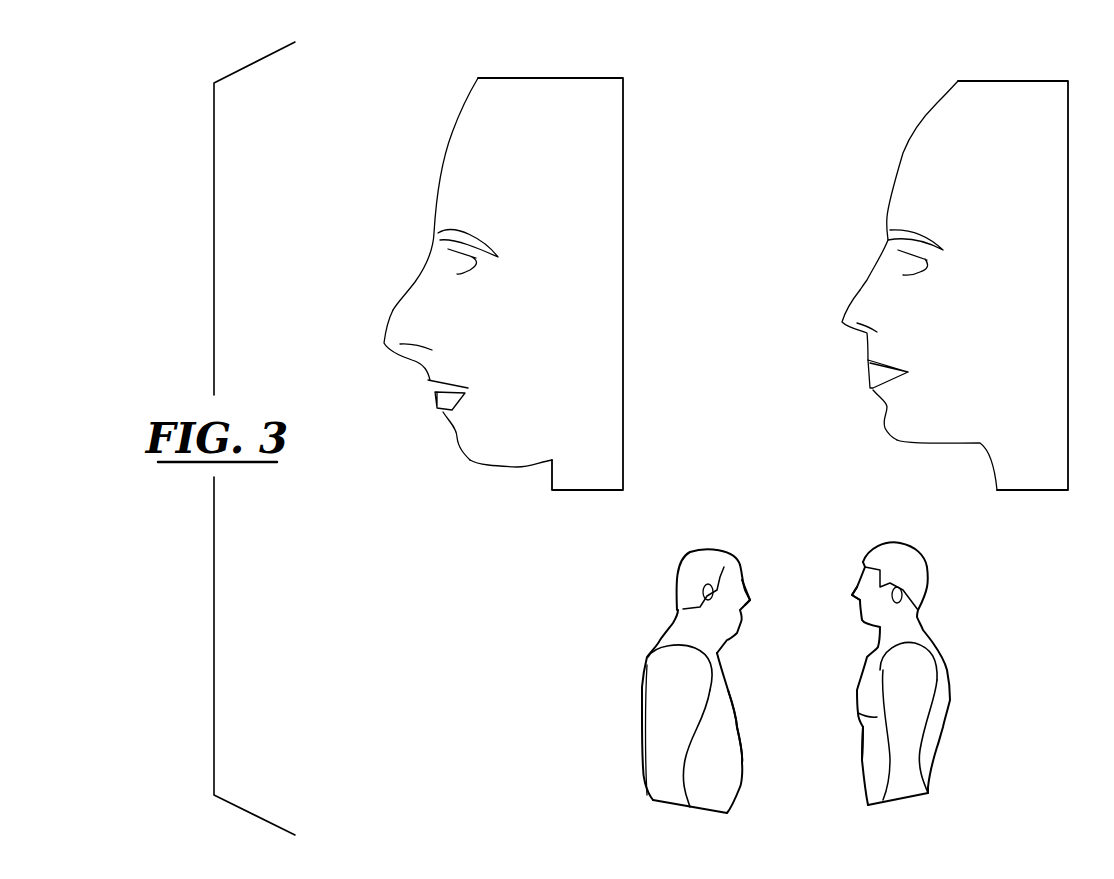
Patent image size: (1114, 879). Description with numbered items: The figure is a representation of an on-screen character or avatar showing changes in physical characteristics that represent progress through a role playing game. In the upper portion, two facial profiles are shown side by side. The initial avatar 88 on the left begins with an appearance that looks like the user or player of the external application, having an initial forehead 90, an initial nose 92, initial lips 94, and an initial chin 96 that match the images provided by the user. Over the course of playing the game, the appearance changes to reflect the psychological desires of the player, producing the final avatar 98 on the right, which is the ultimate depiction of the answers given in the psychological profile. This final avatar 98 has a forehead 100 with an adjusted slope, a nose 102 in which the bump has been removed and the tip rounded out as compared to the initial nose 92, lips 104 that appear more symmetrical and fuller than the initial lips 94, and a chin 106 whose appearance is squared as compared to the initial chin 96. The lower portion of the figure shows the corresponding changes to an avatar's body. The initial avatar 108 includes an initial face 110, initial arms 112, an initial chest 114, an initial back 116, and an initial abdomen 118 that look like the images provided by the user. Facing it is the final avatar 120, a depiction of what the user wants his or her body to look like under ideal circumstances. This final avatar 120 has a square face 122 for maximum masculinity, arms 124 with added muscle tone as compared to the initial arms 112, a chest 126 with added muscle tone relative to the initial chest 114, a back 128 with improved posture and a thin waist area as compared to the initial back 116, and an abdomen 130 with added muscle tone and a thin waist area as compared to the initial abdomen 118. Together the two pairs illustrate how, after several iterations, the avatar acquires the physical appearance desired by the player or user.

The initial avatar 88 is at (553, 78).
The initial forehead 90 is at (452, 133).
The initial nose 92 is at (392, 311).
The initial lips 94 is at (437, 408).
The initial chin 96 is at (470, 460).
The final avatar 98 is at (1035, 80).
The forehead 100 is at (937, 103).
The nose 102 is at (858, 290).
The lips 104 is at (870, 388).
The chin 106 is at (893, 440).
The initial avatar 108 is at (717, 550).
The initial face 110 is at (747, 588).
The initial arms 112 is at (670, 680).
The initial chest 114 is at (723, 708).
The initial back 116 is at (648, 767).
The initial abdomen 118 is at (740, 743).
The final avatar 120 is at (913, 545).
The face 122 is at (862, 588).
The arms 124 is at (917, 675).
The chest 126 is at (868, 683).
The back 128 is at (932, 777).
The abdomen 130 is at (862, 757).